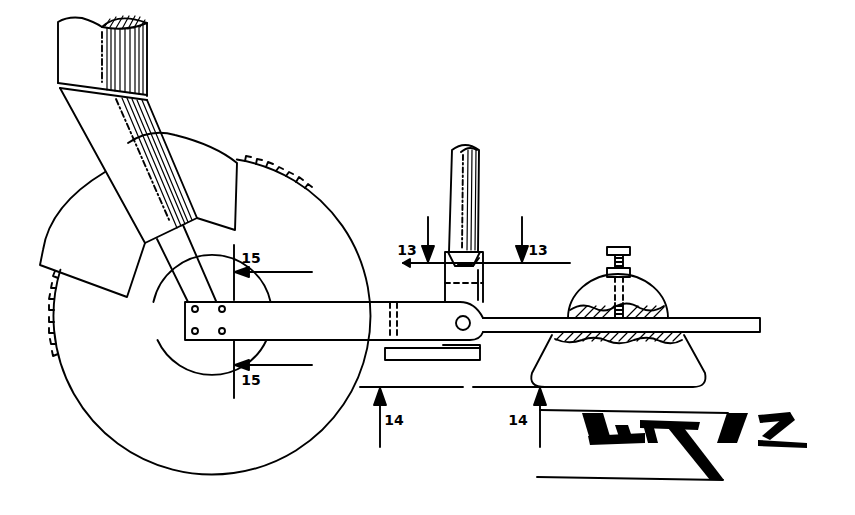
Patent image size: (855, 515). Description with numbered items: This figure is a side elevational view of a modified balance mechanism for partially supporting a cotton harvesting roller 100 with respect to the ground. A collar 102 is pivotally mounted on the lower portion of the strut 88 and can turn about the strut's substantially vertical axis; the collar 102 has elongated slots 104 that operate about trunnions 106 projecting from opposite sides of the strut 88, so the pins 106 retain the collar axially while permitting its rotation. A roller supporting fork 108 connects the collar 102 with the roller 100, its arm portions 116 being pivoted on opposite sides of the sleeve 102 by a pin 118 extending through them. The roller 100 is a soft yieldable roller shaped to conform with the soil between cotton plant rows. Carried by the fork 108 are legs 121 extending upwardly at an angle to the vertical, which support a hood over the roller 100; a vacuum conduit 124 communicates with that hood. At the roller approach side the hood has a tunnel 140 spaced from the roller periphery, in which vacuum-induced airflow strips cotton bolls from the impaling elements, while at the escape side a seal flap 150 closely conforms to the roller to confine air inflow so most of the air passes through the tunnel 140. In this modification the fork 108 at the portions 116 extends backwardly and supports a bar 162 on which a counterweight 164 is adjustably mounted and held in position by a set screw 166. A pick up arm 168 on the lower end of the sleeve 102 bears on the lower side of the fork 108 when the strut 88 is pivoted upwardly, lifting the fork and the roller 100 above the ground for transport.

The strut 88 is at (476, 187).
The roller 100 is at (303, 426).
The collar 102 is at (484, 283).
The elongated slots 104 is at (445, 262).
The trunnions 106 is at (470, 255).
The roller supporting fork 108 is at (332, 306).
The arm portions 116 is at (430, 320).
The pin 118 is at (476, 348).
The legs 121 is at (197, 268).
The vacuum conduit 124 is at (163, 146).
The tunnel 140 is at (72, 221).
The seal flap 150 is at (240, 157).
The bar 162 is at (722, 323).
The clamp 164 is at (649, 295).
The set screw 166 is at (629, 250).
The pick up arm 168 is at (385, 353).